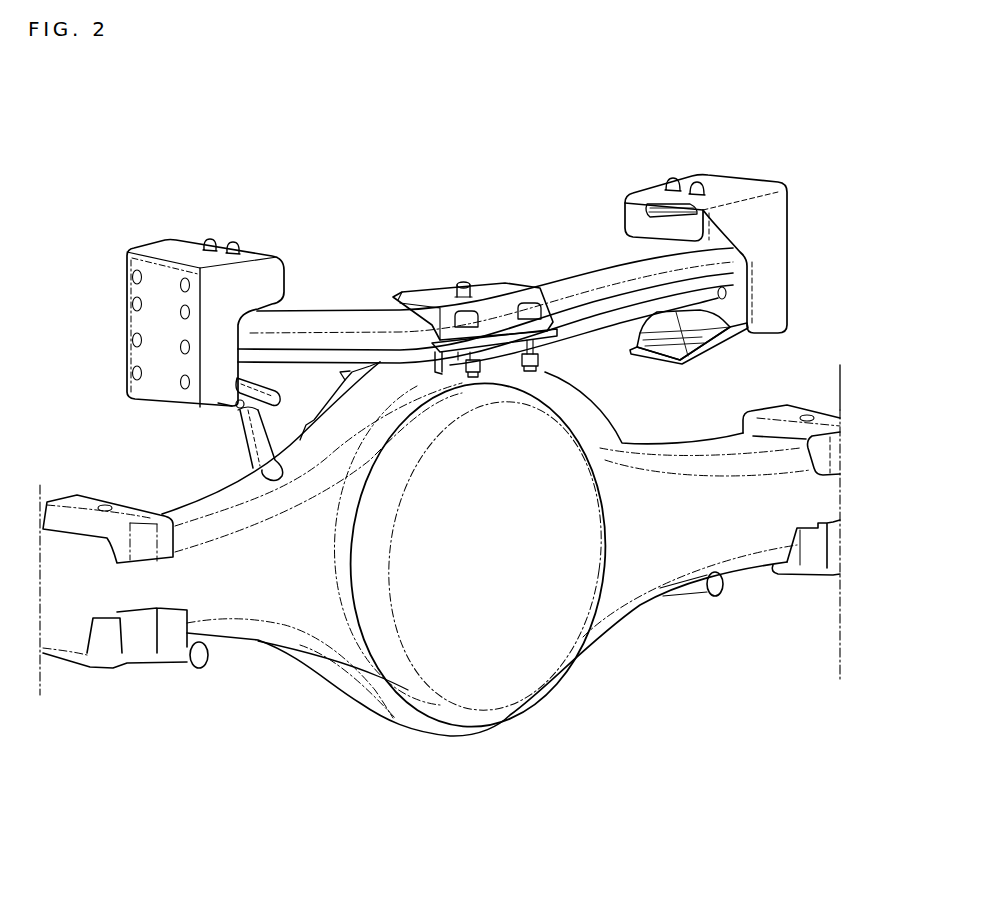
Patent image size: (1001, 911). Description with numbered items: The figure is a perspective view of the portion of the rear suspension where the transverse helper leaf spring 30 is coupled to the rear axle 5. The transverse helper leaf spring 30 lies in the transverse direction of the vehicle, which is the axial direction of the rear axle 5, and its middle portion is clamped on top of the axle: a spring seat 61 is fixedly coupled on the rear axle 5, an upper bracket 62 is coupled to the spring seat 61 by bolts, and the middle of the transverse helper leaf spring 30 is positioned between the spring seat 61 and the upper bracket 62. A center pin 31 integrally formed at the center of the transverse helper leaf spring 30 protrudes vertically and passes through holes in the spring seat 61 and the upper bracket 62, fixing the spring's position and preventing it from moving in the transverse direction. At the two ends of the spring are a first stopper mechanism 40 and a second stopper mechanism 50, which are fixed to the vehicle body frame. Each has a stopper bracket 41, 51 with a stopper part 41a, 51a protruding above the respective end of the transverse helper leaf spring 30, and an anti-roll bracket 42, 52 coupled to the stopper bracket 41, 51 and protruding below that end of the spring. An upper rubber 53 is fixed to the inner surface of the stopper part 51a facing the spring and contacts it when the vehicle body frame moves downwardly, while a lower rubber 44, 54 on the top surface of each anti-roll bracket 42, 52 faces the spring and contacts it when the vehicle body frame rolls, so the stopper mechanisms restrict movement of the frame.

The rear axle 5 is at (512, 685).
The transverse helper leaf spring 30 is at (377, 317).
The center pin 31 is at (463, 283).
The first stopper mechanism 40 is at (199, 320).
The stopper bracket 41 is at (137, 323).
The stopper part 41a is at (255, 254).
The anti-roll bracket 42 is at (244, 406).
The lower rubber 44 is at (268, 378).
The second stopper mechanism 50 is at (710, 237).
The stopper bracket 51 is at (787, 253).
The stopper part 51a is at (657, 181).
The anti-roll bracket 52 is at (713, 347).
The upper rubber 53 is at (630, 213).
The lower rubber 54 is at (668, 322).
The spring seat 61 is at (497, 350).
The upper bracket 62 is at (500, 290).